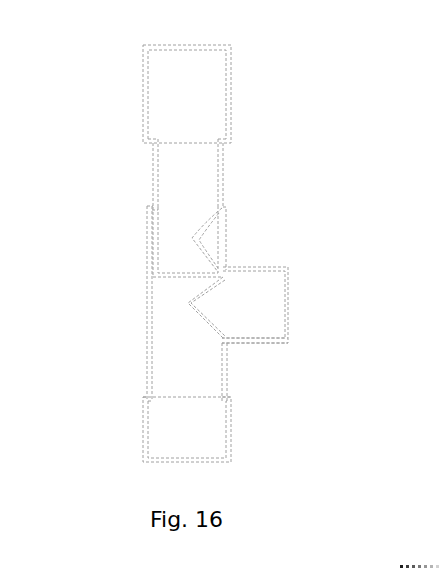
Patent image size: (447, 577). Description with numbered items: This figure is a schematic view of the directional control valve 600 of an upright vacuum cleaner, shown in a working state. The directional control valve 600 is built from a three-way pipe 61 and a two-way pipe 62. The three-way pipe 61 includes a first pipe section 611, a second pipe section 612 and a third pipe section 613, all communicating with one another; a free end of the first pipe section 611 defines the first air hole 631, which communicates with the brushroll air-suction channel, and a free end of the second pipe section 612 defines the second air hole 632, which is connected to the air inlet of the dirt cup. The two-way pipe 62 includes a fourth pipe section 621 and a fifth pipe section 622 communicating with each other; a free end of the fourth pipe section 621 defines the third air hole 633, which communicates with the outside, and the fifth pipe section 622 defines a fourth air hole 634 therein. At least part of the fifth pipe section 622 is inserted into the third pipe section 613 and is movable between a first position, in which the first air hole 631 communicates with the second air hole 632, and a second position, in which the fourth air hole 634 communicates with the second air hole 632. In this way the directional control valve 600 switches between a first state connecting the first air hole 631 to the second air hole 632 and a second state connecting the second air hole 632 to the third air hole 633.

The directional control valve 600 is at (250, 92).
The three-way pipe 61 is at (342, 243).
The first pipe section 611 is at (208, 423).
The second pipe section 612 is at (267, 295).
The third pipe section 613 is at (224, 230).
The two-way pipe 62 is at (83, 113).
The fourth pipe section 621 is at (146, 83).
The fifth pipe section 622 is at (155, 196).
The first air hole 631 is at (188, 463).
The second air hole 632 is at (292, 336).
The third air hole 633 is at (192, 48).
The fourth air hole 634 is at (223, 208).